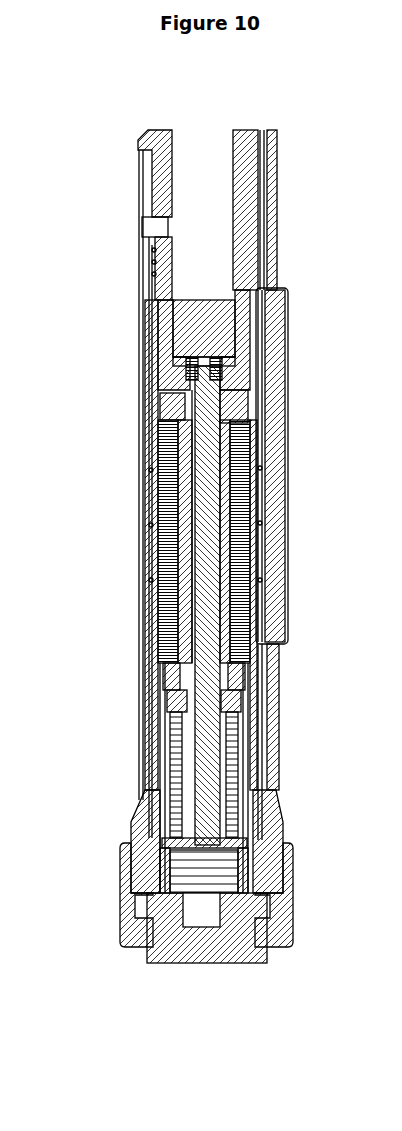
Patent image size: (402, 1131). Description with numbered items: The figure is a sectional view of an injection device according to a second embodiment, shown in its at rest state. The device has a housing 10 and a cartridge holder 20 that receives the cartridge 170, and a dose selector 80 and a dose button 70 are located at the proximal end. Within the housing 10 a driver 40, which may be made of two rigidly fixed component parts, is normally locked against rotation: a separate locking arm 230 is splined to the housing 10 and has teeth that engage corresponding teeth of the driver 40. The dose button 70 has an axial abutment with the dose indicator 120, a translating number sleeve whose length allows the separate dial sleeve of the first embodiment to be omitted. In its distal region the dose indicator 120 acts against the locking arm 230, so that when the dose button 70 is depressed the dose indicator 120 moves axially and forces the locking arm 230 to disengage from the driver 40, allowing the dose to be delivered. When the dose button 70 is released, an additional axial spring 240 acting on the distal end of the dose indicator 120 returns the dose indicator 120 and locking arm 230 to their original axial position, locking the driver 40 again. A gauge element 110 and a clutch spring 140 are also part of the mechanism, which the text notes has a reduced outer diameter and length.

The housing 10 is at (141, 533).
The cartridge holder 20 is at (152, 140).
The driver 40 is at (185, 672).
The dose button 70 is at (176, 938).
The dose selector 80 is at (128, 875).
The gauge element 110 is at (262, 475).
The dose indicator 120 is at (157, 478).
The clutch spring 140 is at (228, 880).
The cartridge 170 is at (236, 200).
The locking arm 230 is at (161, 420).
The axial spring 240 is at (157, 263).